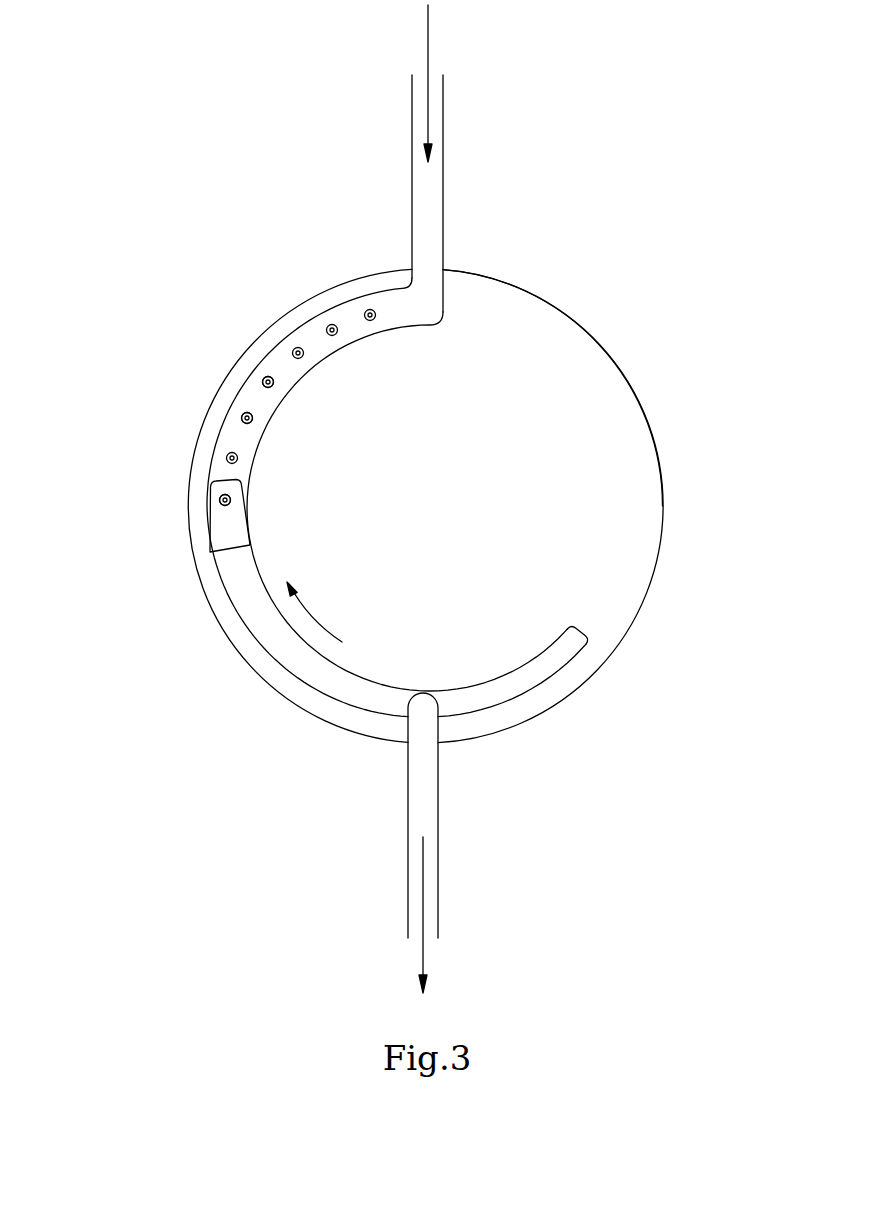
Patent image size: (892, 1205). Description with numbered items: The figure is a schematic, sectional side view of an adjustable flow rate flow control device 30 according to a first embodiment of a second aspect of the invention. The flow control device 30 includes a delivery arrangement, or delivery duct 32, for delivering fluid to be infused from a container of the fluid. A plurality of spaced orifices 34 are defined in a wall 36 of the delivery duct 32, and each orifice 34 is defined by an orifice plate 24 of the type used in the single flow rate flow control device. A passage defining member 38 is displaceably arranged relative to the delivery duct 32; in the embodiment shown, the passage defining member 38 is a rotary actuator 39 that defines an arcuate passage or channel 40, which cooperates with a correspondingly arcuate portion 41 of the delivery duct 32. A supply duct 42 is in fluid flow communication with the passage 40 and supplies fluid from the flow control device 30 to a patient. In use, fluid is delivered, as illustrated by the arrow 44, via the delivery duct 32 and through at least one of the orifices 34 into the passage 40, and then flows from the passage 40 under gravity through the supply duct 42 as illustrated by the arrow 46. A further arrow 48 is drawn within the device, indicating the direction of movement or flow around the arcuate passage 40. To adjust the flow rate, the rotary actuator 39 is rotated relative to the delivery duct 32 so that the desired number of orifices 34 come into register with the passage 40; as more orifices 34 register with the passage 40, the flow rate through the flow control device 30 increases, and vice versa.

The flow control device 30 is at (652, 197).
The delivery duct 32 is at (430, 243).
The orifices 34 is at (245, 413).
The wall 36 is at (292, 330).
The passage defining member 38 is at (675, 551).
The rotary actuator 39 is at (597, 381).
The passage 40 is at (305, 670).
The arcuate portion 41 is at (252, 472).
The supply duct 42 is at (428, 802).
The arrow 44 is at (428, 38).
The arrow 46 is at (423, 908).
The flow direction in chamber 48 is at (317, 617).
The orifice plate 24 is at (247, 424).